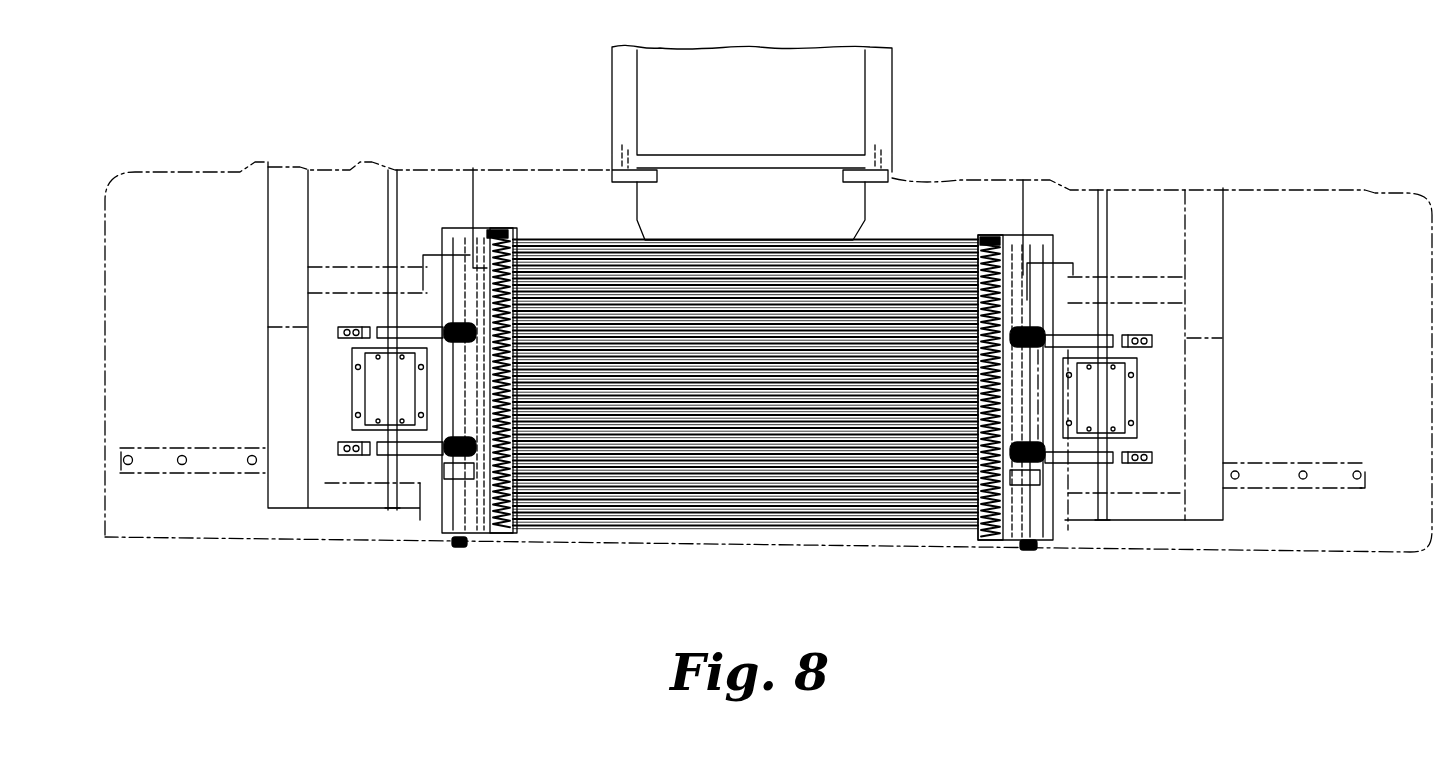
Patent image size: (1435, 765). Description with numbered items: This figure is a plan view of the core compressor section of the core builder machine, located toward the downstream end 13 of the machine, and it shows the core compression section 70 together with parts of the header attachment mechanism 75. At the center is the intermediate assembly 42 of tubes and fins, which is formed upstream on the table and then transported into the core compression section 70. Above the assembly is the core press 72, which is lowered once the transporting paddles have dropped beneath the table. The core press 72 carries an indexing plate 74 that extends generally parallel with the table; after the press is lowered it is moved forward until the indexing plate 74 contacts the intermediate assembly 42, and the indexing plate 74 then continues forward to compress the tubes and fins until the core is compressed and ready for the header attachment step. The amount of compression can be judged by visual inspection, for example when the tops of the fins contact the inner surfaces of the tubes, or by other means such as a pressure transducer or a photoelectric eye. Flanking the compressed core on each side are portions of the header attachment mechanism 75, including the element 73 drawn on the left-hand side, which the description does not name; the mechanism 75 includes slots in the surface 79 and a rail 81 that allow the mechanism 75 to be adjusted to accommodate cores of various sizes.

The downstream end 13 is at (597, 545).
The intermediate assembly 42 is at (936, 228).
The core compression section 70 is at (540, 225).
The core press 72 is at (605, 90).
The adjusting screw 73 is at (368, 232).
The indexing plate 74 is at (637, 221).
The header attachment mechanism 75 is at (1136, 529).
The surface 79 is at (313, 413).
The rail 81 is at (328, 485).